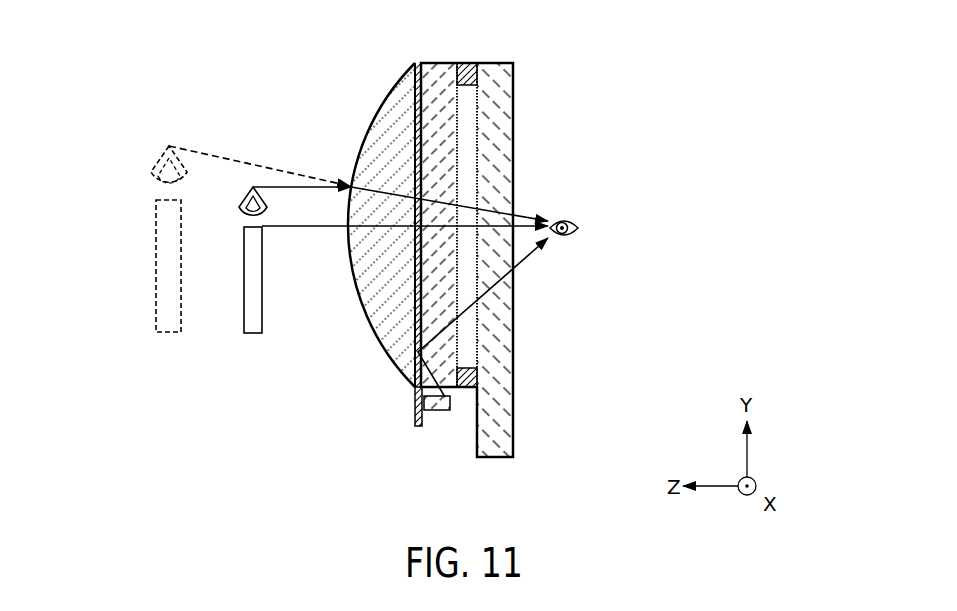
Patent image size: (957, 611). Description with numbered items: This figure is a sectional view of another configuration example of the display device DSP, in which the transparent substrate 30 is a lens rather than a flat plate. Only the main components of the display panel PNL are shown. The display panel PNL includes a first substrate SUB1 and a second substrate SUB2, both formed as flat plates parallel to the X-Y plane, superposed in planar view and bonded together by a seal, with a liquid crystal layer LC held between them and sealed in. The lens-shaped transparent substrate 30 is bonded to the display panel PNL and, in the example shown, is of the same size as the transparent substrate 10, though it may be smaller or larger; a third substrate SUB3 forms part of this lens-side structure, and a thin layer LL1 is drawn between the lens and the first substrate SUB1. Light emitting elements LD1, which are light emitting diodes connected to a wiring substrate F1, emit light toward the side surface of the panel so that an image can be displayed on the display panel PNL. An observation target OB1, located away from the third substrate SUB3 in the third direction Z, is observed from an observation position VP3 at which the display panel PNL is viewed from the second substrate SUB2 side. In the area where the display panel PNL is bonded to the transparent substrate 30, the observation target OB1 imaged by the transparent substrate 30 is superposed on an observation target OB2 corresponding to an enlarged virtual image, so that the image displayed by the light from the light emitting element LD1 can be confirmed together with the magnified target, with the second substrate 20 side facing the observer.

The display device DSP is at (565, 52).
The display panel PNL is at (522, 108).
The first substrate SUB1 is at (445, 73).
The transparent substrate 10 is at (460, 200).
The second substrate SUB2 is at (495, 457).
The second substrate 20 is at (498, 288).
The liquid crystal layer LC is at (468, 163).
The transparent substrate 30 is at (370, 110).
The third substrate SUB3 is at (358, 153).
The lens layer LL1 is at (418, 66).
The wiring substrate F1 is at (415, 400).
The light emitting element LD1 is at (441, 412).
The observation target OB1 is at (253, 334).
The observation target OB2 is at (170, 334).
The observation position VP3 is at (587, 230).